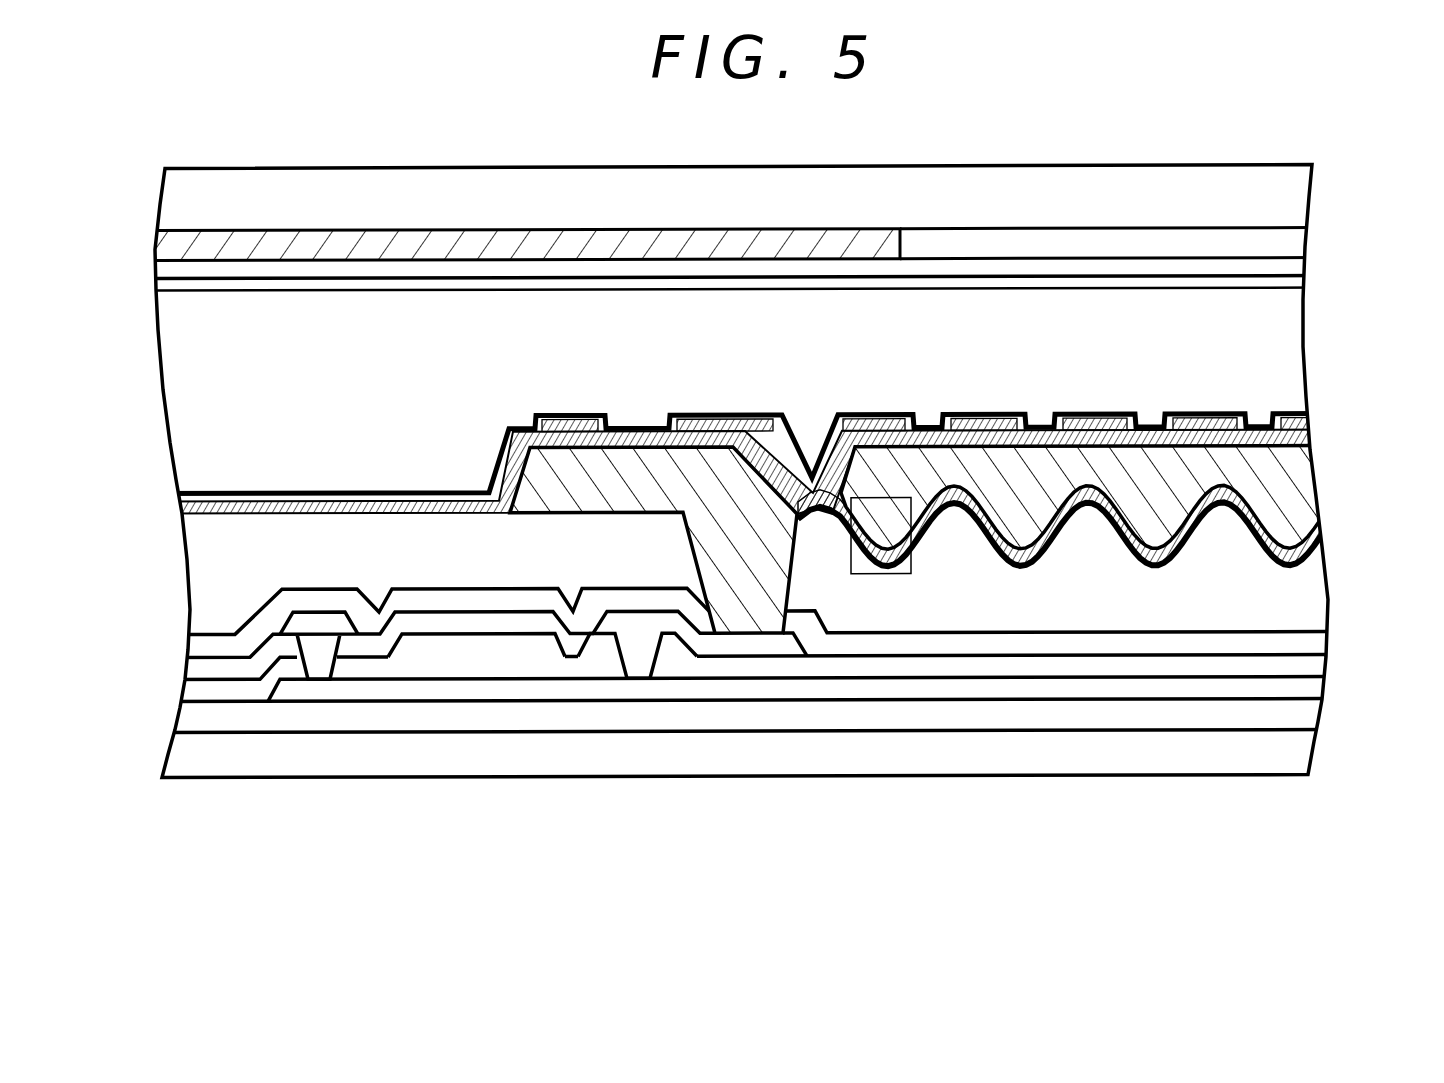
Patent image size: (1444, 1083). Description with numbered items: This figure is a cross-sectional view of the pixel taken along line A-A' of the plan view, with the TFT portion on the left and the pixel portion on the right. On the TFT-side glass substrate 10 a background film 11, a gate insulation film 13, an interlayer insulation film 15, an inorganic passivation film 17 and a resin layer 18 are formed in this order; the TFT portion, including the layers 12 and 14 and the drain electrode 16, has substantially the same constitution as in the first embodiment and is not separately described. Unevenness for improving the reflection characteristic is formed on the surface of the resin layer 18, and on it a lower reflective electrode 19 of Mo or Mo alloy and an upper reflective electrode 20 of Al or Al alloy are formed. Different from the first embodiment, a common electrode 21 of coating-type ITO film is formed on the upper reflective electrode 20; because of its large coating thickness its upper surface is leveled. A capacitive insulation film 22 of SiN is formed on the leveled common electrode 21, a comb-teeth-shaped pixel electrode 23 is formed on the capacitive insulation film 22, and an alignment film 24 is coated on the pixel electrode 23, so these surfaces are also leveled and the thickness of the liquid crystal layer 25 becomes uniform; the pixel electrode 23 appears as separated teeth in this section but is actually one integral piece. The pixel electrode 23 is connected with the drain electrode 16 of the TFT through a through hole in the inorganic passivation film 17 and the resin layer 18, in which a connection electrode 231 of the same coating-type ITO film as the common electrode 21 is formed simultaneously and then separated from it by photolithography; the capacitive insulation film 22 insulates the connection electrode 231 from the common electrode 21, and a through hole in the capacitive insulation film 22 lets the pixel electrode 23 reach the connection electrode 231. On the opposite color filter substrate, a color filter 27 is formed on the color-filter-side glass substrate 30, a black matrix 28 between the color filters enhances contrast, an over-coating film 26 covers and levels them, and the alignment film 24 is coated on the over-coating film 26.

The TFT-side glass substrate 10 is at (185, 752).
The background film 11 is at (195, 718).
The semiconductor layer 12 is at (398, 695).
The gate insulation film 13 is at (195, 688).
The gate electrode 14 is at (500, 648).
The interlayer insulation film 15 is at (195, 669).
The drain electrode 16 is at (738, 647).
The inorganic passivation film 17 is at (195, 647).
The resin layer 18 is at (205, 574).
The lower reflective electrode 19 is at (1320, 548).
The upper reflective electrode 20 is at (1303, 496).
The common electrode 21 is at (1300, 467).
The capacitive insulation film 22 is at (190, 512).
The pixel electrode 23 is at (1097, 426).
The alignment film 24 is at (188, 291).
The liquid crystal layer 25 is at (200, 397).
The over-coating film 26 is at (170, 270).
The color filter 27 is at (1290, 243).
The black matrix 28 is at (188, 247).
The color-filter-side glass substrate 30 is at (186, 200).
The connection electrode 231 is at (800, 520).
The region A is at (903, 577).